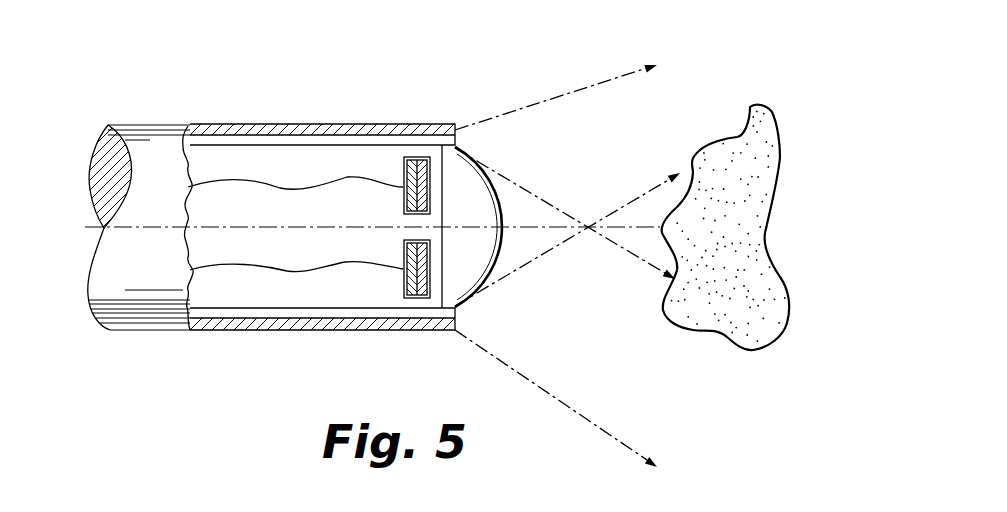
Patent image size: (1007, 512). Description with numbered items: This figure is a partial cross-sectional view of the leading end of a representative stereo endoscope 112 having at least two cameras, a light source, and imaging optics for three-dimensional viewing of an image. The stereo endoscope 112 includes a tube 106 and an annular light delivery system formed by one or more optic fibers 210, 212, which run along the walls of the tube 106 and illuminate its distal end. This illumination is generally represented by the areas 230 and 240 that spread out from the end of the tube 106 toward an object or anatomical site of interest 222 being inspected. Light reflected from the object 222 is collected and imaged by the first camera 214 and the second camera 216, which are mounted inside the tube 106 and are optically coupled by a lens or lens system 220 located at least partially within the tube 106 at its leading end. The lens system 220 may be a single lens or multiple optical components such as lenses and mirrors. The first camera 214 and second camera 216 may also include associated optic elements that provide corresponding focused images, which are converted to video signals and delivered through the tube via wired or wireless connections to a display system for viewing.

The tube 106 is at (157, 126).
The stereo endoscope 112 is at (363, 198).
The optic fiber 210 is at (273, 140).
The optic fiber 212 is at (277, 312).
The first camera 214 is at (405, 283).
The second camera 216 is at (405, 172).
The lens system 220 is at (478, 248).
The object or anatomical site of interest 222 is at (733, 248).
The illuminated area 230 is at (601, 326).
The illuminated area 240 is at (599, 151).